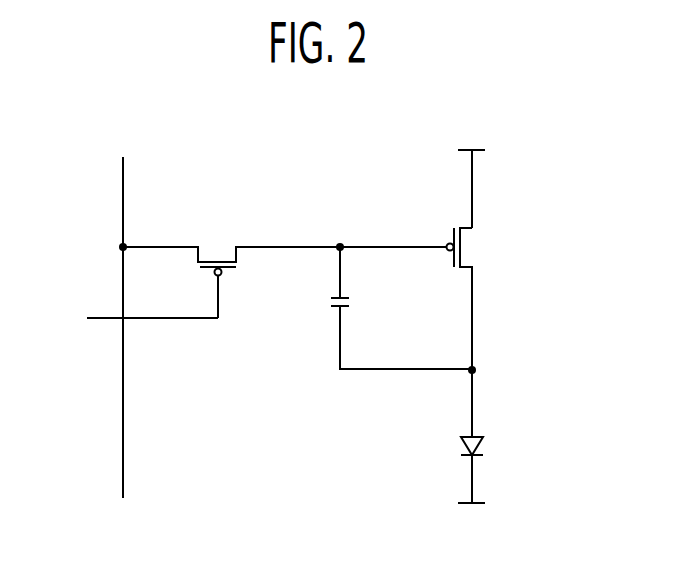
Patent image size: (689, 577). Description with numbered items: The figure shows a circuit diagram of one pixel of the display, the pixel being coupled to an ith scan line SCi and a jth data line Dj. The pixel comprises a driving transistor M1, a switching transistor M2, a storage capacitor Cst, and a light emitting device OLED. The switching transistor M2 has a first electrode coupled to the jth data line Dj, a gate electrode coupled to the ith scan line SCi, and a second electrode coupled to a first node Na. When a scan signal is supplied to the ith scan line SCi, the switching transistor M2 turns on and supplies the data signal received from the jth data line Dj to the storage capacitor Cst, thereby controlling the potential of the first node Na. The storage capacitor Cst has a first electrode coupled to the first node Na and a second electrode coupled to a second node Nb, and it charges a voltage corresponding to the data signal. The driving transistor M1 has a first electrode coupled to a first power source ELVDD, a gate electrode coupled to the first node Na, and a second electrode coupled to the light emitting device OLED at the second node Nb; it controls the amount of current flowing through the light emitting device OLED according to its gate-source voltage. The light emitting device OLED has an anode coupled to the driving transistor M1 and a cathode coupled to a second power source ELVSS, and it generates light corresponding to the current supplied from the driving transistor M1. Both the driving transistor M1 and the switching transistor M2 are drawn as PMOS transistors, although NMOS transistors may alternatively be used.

The jth data line Dj is at (124, 311).
The ith scan line SCi is at (133, 320).
The switching transistor M2 is at (231, 268).
The first node Na is at (389, 234).
The storage capacitor Cst is at (401, 308).
The first power source ELVDD is at (471, 176).
The driving transistor M1 is at (474, 299).
The second node Nb is at (485, 373).
The light emitting device OLED is at (498, 436).
The second power source ELVSS is at (469, 522).